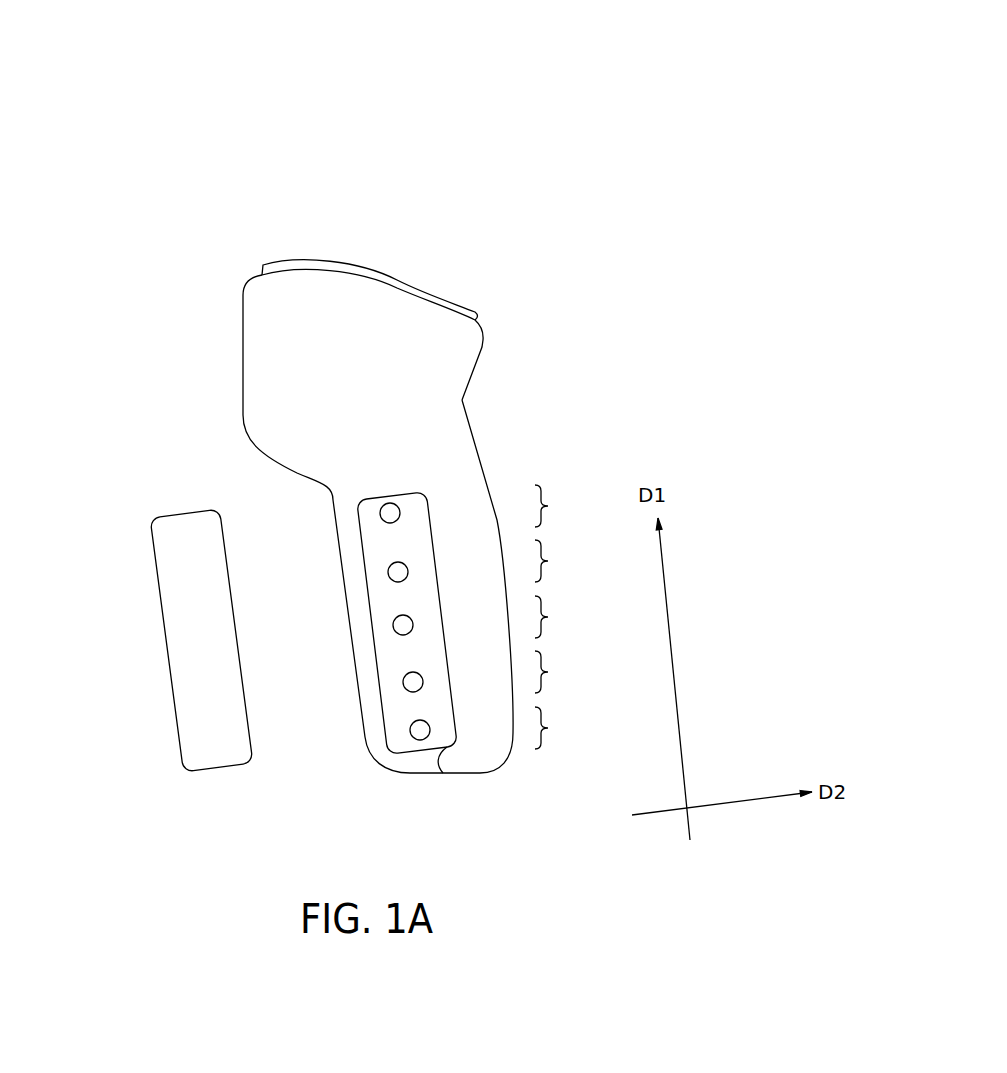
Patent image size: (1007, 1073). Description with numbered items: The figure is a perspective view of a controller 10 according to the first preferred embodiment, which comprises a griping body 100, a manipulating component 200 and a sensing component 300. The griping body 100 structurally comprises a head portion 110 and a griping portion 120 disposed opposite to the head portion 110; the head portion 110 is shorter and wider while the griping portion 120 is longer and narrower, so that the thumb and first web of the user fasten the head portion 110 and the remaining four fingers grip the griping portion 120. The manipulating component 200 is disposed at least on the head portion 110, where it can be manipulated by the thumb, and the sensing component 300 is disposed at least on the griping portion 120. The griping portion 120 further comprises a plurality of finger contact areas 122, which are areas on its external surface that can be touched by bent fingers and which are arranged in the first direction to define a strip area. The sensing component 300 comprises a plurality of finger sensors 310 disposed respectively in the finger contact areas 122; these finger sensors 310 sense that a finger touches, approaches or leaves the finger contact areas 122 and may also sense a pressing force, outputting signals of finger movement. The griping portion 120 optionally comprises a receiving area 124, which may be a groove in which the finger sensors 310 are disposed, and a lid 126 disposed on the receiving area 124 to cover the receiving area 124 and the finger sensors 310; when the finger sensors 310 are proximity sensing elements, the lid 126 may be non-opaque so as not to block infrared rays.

The controller 10 is at (654, 49).
The griping body 100 is at (145, 283).
The head portion 110 is at (447, 363).
The griping portion 120 is at (472, 482).
The finger contact areas 122 is at (565, 617).
The receiving area 124 is at (443, 773).
The lid 126 is at (170, 557).
The manipulating component 200 is at (412, 242).
The sensing component 300 is at (260, 637).
The finger sensors 310 is at (390, 577).